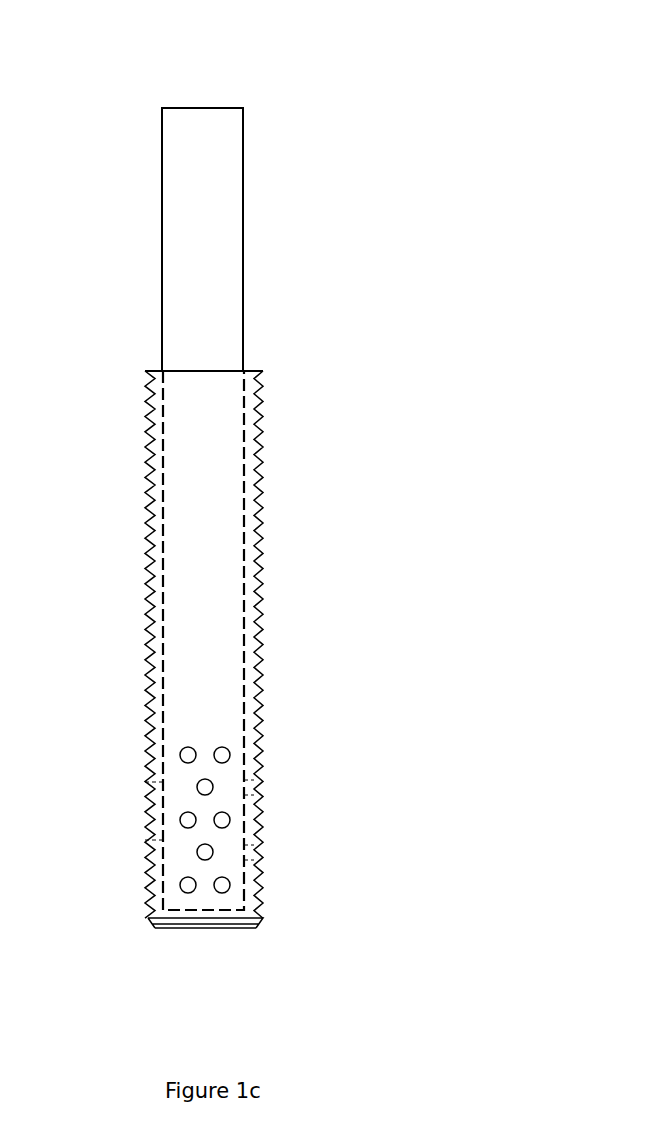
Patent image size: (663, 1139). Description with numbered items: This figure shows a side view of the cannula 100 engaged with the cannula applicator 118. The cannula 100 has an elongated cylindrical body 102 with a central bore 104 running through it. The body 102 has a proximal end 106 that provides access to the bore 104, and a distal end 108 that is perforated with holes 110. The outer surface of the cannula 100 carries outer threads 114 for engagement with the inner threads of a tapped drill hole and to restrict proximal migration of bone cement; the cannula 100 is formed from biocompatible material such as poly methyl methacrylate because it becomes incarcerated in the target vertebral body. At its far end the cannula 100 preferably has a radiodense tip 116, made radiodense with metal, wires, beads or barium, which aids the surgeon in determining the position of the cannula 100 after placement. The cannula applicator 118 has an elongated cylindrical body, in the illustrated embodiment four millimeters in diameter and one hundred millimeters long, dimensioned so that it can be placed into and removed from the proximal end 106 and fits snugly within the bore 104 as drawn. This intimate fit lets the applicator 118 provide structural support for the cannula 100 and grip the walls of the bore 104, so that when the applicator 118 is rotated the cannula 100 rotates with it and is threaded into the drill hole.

The cannula 100 is at (418, 468).
The elongated cylindrical body 102 is at (275, 357).
The central bore 104 is at (228, 512).
The proximal end 106 is at (263, 337).
The distal end 108 is at (242, 957).
The holes 110 is at (238, 835).
The outer threads 114 is at (273, 718).
The radiodense tip 116 is at (165, 933).
The cannula applicator 118 is at (228, 212).